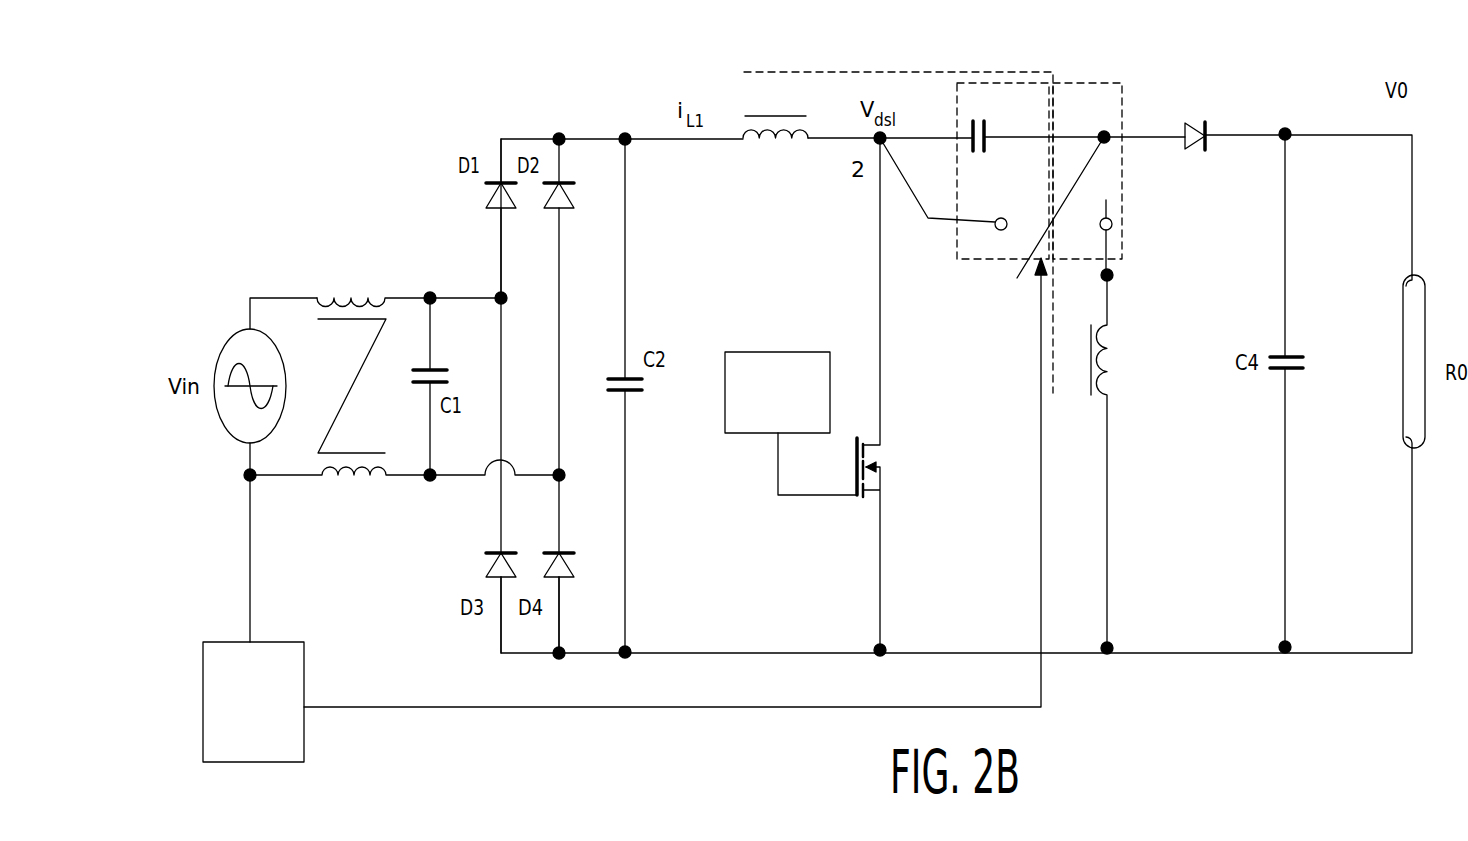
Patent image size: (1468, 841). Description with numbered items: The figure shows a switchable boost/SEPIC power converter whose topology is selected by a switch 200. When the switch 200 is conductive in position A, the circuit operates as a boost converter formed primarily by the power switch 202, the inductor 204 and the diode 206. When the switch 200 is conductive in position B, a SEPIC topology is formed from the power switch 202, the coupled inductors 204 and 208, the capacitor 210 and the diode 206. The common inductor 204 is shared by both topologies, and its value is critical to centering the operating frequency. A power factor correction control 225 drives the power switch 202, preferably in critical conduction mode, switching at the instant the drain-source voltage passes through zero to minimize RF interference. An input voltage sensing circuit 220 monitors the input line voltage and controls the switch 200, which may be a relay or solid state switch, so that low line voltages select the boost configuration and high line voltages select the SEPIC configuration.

The switch 200 is at (1094, 82).
The power switch 202 is at (884, 481).
The inductor 204 is at (762, 143).
The diode 206 is at (1193, 150).
The coupled inductor 208 is at (1104, 340).
The capacitor 210 is at (987, 125).
The input voltage sensing circuit 220 is at (304, 731).
The power factor correction control 225 is at (766, 350).